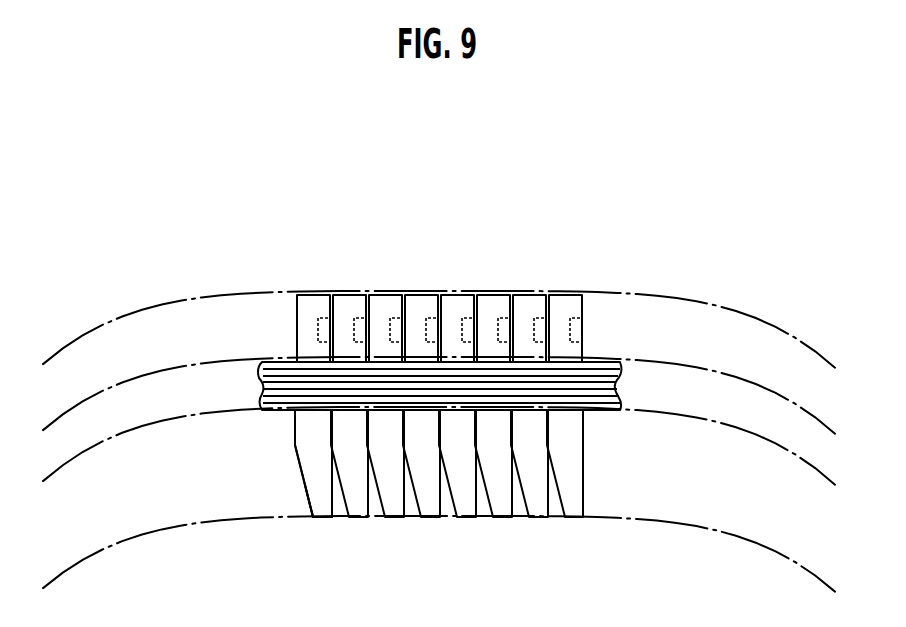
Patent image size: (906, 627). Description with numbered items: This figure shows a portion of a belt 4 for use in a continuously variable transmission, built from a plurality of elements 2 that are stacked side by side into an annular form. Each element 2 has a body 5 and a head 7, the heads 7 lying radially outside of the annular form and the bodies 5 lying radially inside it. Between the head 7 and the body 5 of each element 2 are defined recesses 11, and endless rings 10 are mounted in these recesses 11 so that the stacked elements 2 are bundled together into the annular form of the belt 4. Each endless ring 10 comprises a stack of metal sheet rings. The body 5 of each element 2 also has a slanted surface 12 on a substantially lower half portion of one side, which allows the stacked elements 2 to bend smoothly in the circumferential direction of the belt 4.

The element 2 is at (270, 441).
The belt 4 is at (652, 251).
The body 5 is at (313, 460).
The head 7 is at (318, 296).
The endless ring 10 is at (590, 385).
The recess 11 is at (274, 346).
The slanted surface 12 is at (307, 497).